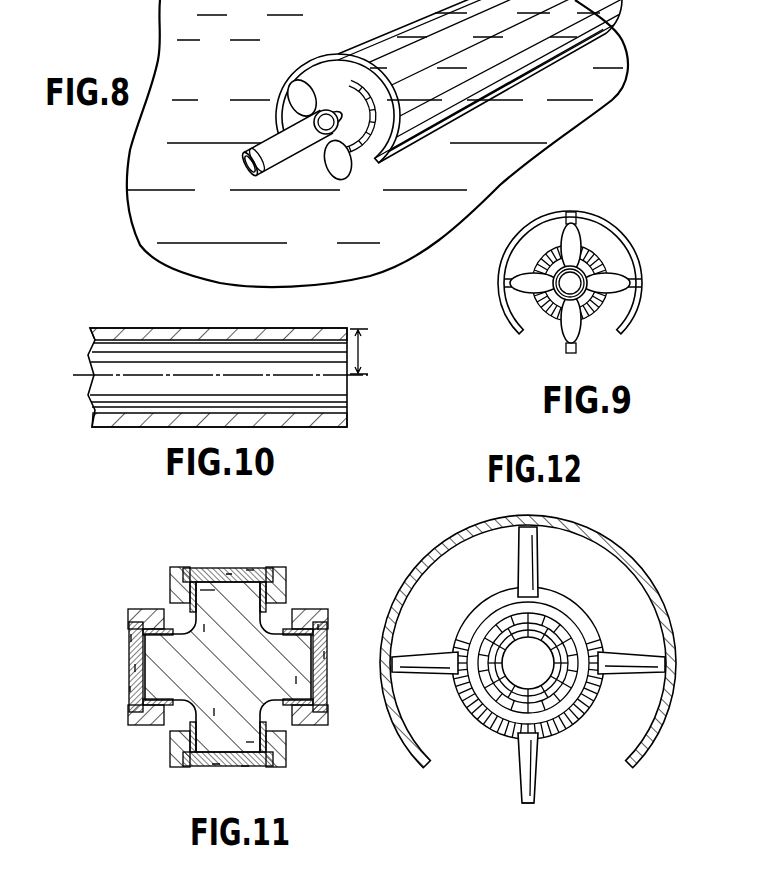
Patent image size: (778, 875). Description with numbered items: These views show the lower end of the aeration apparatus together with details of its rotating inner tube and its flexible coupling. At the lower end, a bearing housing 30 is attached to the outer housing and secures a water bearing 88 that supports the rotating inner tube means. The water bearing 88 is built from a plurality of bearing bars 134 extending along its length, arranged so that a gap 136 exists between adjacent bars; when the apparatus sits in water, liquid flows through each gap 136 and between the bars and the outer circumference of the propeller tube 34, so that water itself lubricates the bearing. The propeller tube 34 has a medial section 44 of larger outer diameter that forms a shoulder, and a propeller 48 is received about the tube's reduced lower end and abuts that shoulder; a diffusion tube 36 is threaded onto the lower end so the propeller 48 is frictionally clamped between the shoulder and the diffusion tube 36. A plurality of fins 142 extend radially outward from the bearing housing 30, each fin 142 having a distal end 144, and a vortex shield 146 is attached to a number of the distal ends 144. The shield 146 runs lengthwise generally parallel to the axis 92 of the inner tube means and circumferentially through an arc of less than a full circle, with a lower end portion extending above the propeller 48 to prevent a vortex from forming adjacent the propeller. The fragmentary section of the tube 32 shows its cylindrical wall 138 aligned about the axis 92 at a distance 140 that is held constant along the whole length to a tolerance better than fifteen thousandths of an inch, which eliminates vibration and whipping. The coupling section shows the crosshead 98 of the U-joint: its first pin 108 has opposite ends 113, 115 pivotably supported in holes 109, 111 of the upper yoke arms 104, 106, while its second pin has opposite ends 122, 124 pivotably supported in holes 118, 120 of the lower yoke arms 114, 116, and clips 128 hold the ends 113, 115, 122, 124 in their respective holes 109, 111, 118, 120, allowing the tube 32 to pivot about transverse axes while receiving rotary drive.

In FIG. 8, the vortex shield 146 is at (413, 59).
In FIG. 9, the vortex shield 146 is at (627, 259).
In FIG. 12, the vortex shield 146 is at (583, 524).
In FIG. 9, the fins 142 is at (579, 221).
In FIG. 12, the fins 142 is at (538, 560).
In FIG. 8, the propeller 48 is at (347, 177).
In FIG. 9, the propeller 48 is at (610, 291).
In FIG. 8, the diffusion tube 36 is at (284, 171).
In FIG. 9, the diffusion tube 36 is at (590, 276).
In FIG. 10, the cylindrical wall 138 is at (160, 330).
In FIG. 10, the tube 32 is at (229, 327).
In FIG. 10, the distance 140 is at (374, 351).
In FIG. 10, the axis 92 is at (373, 380).
In FIG. 11, the arm 104 is at (175, 567).
In FIG. 11, the arm 106 is at (172, 760).
In FIG. 11, the arm 114 is at (146, 608).
In FIG. 11, the arm 116 is at (318, 726).
In FIG. 11, the end 113 is at (210, 588).
In FIG. 11, the clips 128 is at (228, 572).
In FIG. 11, the hole 109 is at (250, 570).
In FIG. 11, the hole 118 is at (131, 638).
In FIG. 11, the crosshead 98 is at (135, 668).
In FIG. 11, the first pin 108 is at (207, 628).
In FIG. 11, the hole 120 is at (325, 655).
In FIG. 11, the end 124 is at (300, 680).
In FIG. 11, the end 122 is at (158, 657).
In FIG. 11, the hole 111 is at (245, 770).
In FIG. 11, the end 115 is at (250, 745).
In FIG. 12, the bearing housing 30 is at (492, 609).
In FIG. 12, the gap 136 is at (548, 621).
In FIG. 12, the water bearing 88 is at (570, 651).
In FIG. 12, the bearing bars 134 is at (527, 670).
In FIG. 12, the propeller tube 34 is at (528, 646).
In FIG. 12, the medial section 44 is at (556, 662).
In FIG. 12, the distal end 144 is at (528, 803).